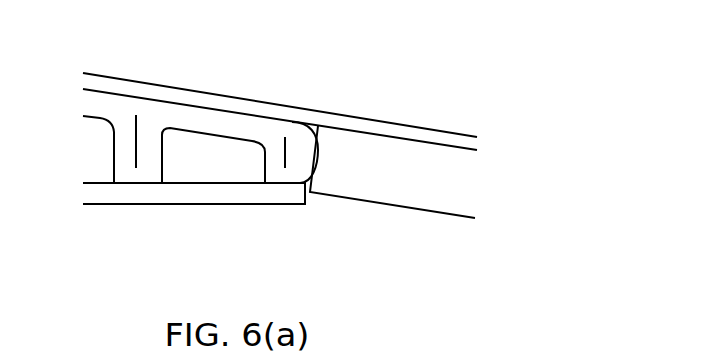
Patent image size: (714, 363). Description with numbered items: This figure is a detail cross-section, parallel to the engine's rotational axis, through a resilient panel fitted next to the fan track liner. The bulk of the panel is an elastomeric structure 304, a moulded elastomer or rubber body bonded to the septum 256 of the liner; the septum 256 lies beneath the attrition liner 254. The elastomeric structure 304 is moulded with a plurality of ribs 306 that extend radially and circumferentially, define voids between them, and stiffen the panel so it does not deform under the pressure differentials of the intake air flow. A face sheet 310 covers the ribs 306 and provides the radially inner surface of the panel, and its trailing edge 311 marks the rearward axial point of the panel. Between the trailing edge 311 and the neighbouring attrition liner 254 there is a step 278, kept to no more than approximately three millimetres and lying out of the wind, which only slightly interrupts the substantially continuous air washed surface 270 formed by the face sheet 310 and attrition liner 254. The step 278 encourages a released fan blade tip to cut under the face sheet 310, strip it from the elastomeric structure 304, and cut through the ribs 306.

The attrition liner 254 is at (377, 160).
The septum 256 is at (305, 113).
The elastomeric structure 304 is at (217, 122).
The ribs 306 is at (123, 168).
The face sheet 310 is at (167, 193).
The trailing edge 311 is at (305, 205).
The step 278 is at (322, 208).
The substantially continuous air washed surface 270 is at (227, 205).